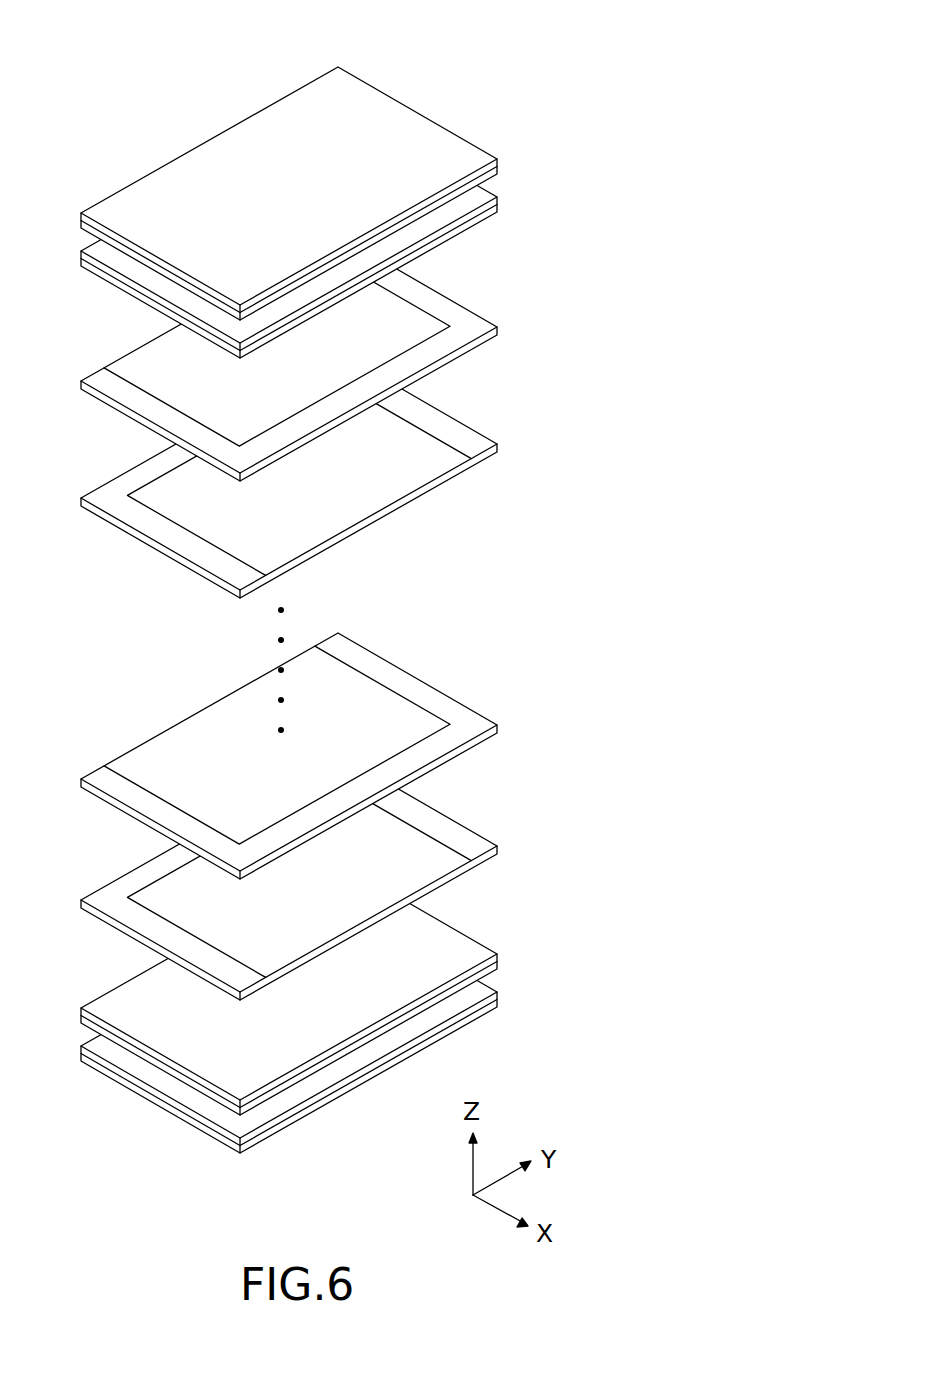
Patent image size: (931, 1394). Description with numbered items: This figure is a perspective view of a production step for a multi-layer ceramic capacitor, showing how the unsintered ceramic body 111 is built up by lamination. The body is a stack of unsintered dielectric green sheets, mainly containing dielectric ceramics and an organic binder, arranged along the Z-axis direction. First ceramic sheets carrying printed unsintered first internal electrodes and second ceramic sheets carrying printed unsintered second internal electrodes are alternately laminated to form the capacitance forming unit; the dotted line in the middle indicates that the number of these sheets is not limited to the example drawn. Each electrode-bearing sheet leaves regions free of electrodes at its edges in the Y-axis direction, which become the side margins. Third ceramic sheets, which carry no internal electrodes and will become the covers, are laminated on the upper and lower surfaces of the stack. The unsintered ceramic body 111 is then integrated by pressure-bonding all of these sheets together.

The unsintered ceramic body 111 is at (348, 585).